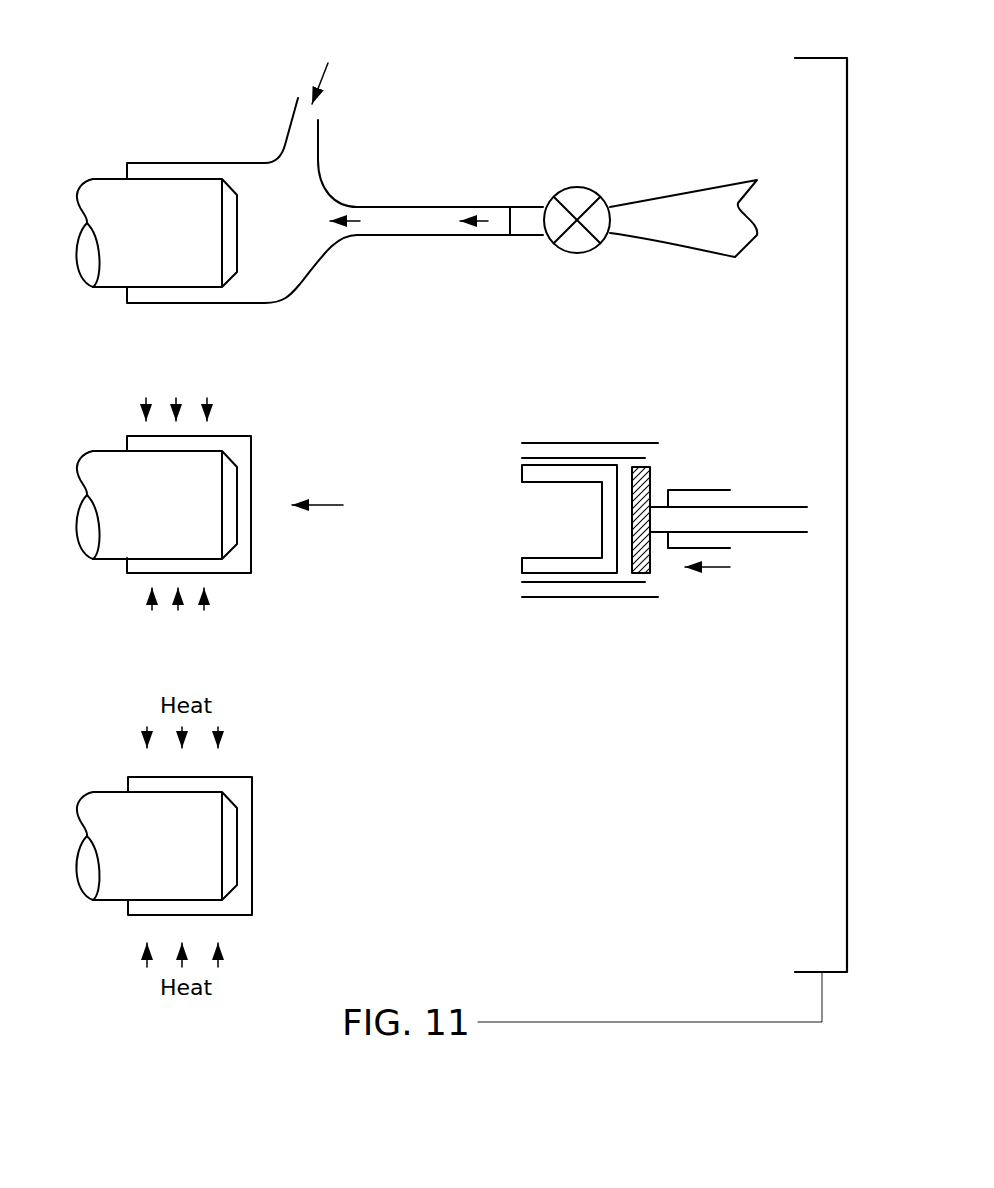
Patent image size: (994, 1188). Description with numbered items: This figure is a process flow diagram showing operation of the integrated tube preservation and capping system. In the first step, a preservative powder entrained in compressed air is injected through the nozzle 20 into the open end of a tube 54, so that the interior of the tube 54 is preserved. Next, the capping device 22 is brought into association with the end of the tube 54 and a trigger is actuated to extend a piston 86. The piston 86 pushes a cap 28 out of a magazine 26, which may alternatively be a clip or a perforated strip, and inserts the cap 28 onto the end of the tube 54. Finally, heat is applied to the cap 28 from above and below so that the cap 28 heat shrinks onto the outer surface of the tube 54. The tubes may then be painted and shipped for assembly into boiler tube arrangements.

The nozzle 20 is at (230, 138).
The tube 54 is at (110, 190).
The cap 28 is at (233, 448).
The magazine 26 is at (613, 418).
The capping device 22 is at (721, 468).
The piston 86 is at (643, 547).